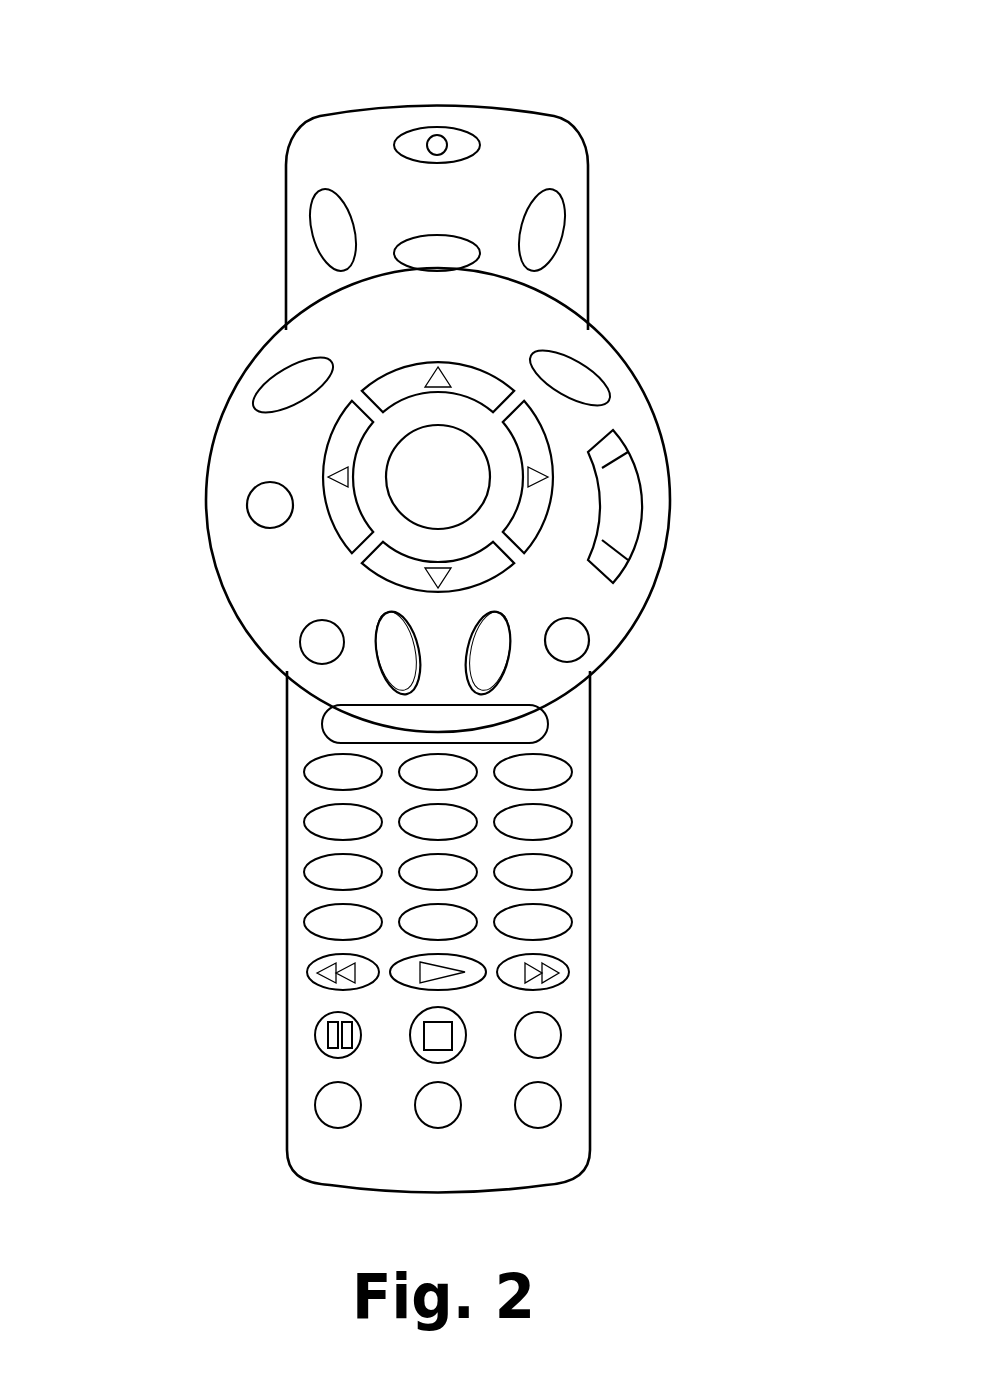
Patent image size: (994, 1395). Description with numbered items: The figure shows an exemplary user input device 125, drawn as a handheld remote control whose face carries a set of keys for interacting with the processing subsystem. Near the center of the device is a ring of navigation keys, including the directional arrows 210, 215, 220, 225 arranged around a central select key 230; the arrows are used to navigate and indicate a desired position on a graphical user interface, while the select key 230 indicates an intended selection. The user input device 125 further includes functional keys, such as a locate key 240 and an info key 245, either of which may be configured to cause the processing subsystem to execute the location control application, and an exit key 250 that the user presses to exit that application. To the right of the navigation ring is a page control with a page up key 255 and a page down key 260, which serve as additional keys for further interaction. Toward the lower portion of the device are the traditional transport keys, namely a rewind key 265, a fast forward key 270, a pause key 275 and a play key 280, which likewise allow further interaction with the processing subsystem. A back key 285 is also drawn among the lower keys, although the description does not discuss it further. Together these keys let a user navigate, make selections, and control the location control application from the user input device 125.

The user input device 125 is at (447, 596).
The directional arrow 210 is at (436, 479).
The directional arrow 215 is at (540, 417).
The directional arrow 220 is at (386, 374).
The directional arrow 225 is at (370, 572).
The select key 230 is at (385, 475).
The locate key 240 is at (247, 505).
The info key 245 is at (582, 362).
The exit key 250 is at (583, 655).
The page up key 255 is at (632, 452).
The page down key 260 is at (630, 572).
The rewind key 265 is at (305, 972).
The fast forward key 270 is at (570, 973).
The pause key 275 is at (315, 1036).
The play key 280 is at (407, 957).
The back button 285 is at (560, 1110).